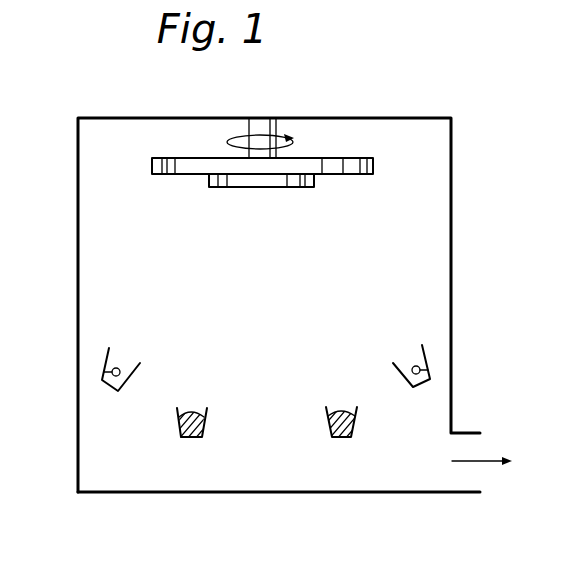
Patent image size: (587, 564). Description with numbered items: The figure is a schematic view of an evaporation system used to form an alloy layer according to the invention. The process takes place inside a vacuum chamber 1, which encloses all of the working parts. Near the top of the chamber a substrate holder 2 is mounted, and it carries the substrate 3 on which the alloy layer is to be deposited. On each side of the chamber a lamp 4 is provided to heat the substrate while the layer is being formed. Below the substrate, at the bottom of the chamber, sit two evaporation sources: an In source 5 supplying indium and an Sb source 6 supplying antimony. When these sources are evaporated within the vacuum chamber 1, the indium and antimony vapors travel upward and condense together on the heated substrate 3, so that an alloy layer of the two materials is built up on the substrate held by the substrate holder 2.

The vacuum chamber 1 is at (451, 270).
The substrate holder 2 is at (373, 165).
The substrate 3 is at (314, 184).
The lamp 4 is at (102, 369).
The In source 5 is at (192, 437).
The Sb source 6 is at (343, 437).